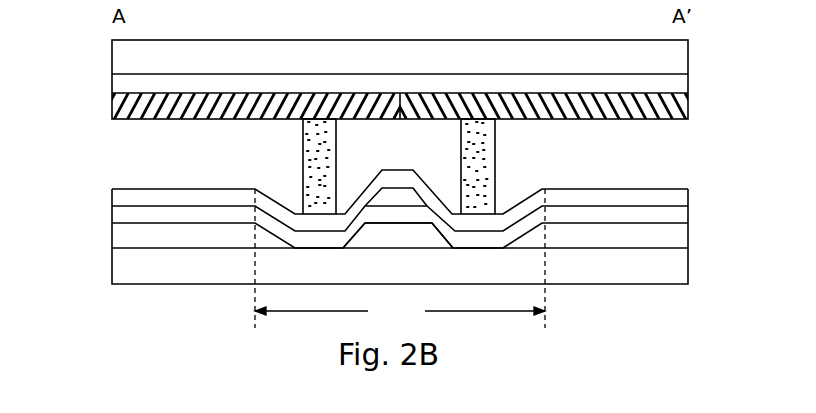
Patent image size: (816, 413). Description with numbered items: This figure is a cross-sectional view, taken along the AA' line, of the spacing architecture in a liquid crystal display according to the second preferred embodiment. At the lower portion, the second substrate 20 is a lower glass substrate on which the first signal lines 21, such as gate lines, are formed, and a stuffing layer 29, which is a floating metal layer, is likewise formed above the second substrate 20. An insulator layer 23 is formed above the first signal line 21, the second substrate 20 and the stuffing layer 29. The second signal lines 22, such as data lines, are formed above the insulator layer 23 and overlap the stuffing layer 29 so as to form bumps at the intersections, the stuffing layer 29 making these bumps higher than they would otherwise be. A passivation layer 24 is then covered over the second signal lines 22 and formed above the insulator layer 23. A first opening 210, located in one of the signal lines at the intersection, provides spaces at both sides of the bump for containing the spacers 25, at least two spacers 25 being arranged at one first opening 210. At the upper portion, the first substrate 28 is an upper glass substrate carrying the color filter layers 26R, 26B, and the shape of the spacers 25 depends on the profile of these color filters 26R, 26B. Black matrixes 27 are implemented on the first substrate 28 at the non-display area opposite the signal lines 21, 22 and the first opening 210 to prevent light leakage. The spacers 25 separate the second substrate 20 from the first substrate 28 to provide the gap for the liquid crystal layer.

The second substrate 20 is at (142, 268).
The first signal line 21 is at (128, 241).
The second signal line 22 is at (400, 197).
The insulator layer 23 is at (123, 215).
The passivation layer 24 is at (123, 198).
The spacer 25 is at (478, 162).
The blue color filter layer 26B is at (118, 112).
The red color filter layer 26R is at (688, 109).
The black matrix 27 is at (123, 83).
The first substrate 28 is at (123, 58).
The stuffing layer 29 is at (395, 240).
The first opening 210 is at (400, 258).